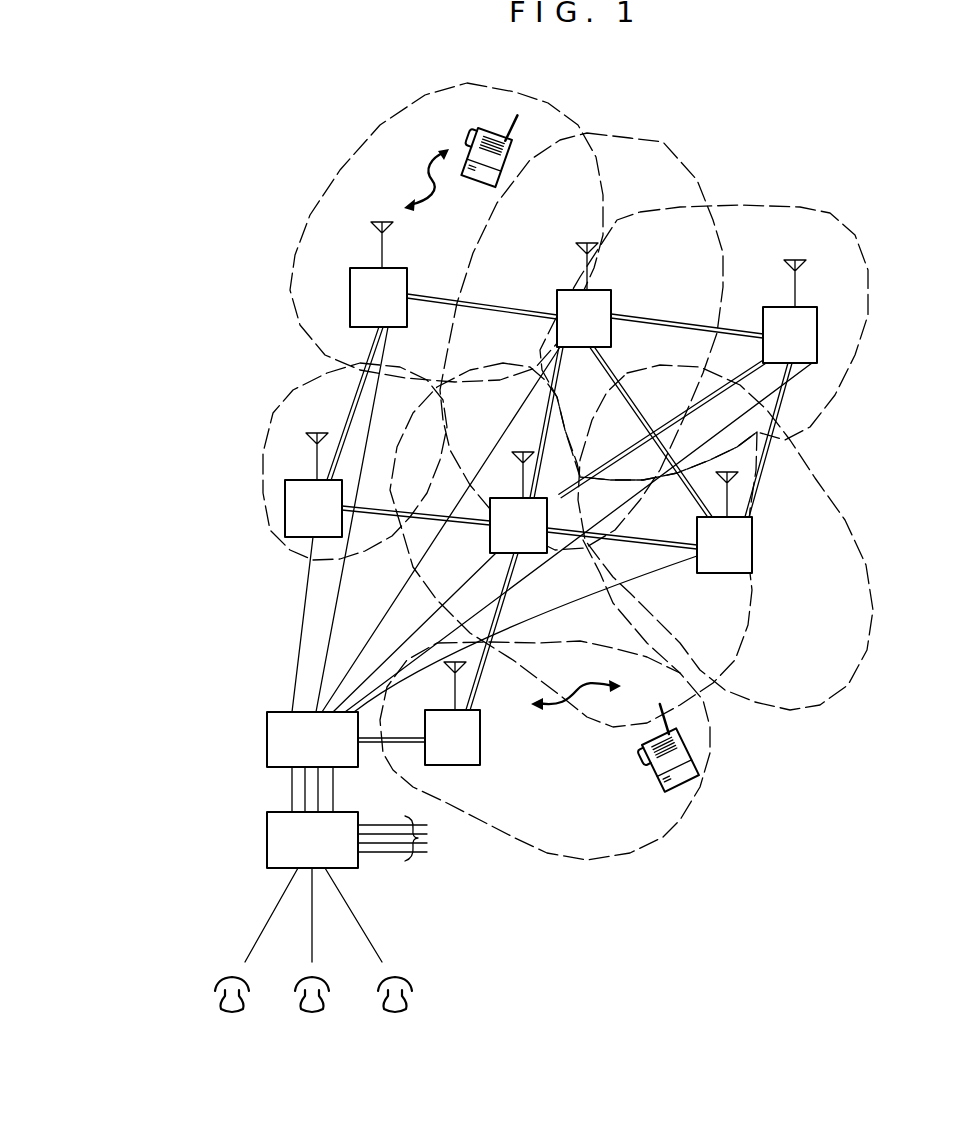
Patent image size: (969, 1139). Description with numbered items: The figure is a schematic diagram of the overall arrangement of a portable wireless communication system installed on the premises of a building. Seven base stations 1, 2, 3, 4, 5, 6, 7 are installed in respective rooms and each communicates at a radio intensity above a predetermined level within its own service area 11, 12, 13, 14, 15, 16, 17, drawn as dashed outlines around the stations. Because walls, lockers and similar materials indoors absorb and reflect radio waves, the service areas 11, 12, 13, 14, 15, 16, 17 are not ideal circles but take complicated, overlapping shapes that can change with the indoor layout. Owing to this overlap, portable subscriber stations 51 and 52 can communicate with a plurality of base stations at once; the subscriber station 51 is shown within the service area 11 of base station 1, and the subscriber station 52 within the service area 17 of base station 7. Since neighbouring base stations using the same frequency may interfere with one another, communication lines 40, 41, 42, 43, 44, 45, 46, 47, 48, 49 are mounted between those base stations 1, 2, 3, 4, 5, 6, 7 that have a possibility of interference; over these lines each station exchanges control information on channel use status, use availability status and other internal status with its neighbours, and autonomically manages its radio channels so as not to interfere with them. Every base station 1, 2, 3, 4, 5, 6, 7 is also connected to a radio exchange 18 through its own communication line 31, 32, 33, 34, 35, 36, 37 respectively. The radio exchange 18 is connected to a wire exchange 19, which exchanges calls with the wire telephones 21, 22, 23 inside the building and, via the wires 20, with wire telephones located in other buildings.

The base station 1 is at (350, 297).
The base station 2 is at (616, 308).
The base station 3 is at (819, 335).
The base station 4 is at (291, 478).
The base station 5 is at (505, 497).
The base station 6 is at (754, 545).
The base station 7 is at (481, 741).
The service area 11 is at (348, 160).
The service area 12 is at (674, 168).
The service area 13 is at (797, 208).
The service area 14 is at (273, 407).
The service area 15 is at (713, 690).
The service area 16 is at (828, 472).
The service area 17 is at (678, 830).
The radio exchange 18 is at (267, 742).
The wire exchange 19 is at (267, 843).
The wires 20 is at (413, 862).
The wire telephone 21 is at (232, 1014).
The wire telephone 22 is at (312, 1014).
The wire telephone 23 is at (395, 1014).
The communication line 31 is at (326, 650).
The communication line 32 is at (408, 590).
The communication line 33 is at (527, 568).
The communication line 34 is at (290, 642).
The communication line 35 is at (394, 652).
The communication line 36 is at (659, 569).
The communication line 37 is at (391, 760).
The communication line 40 is at (686, 326).
The communication line 41 is at (760, 479).
The communication line 42 is at (656, 541).
The communication line 43 is at (545, 421).
The communication line 44 is at (616, 373).
The communication line 45 is at (706, 402).
The communication line 46 is at (509, 307).
The communication line 47 is at (348, 410).
The communication line 48 is at (460, 526).
The communication line 49 is at (492, 660).
The subscriber station 51 is at (487, 124).
The subscriber station 52 is at (662, 788).